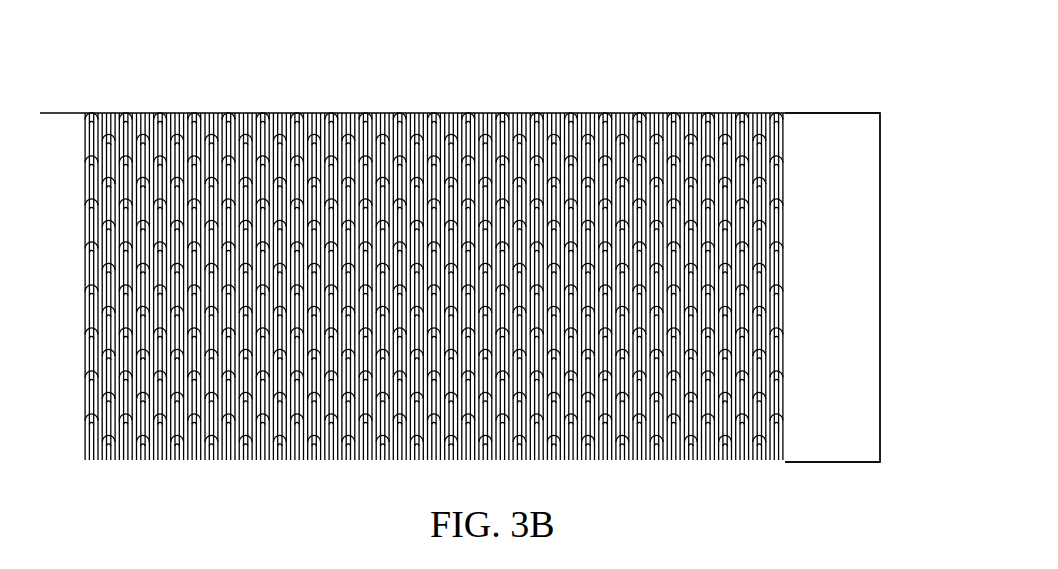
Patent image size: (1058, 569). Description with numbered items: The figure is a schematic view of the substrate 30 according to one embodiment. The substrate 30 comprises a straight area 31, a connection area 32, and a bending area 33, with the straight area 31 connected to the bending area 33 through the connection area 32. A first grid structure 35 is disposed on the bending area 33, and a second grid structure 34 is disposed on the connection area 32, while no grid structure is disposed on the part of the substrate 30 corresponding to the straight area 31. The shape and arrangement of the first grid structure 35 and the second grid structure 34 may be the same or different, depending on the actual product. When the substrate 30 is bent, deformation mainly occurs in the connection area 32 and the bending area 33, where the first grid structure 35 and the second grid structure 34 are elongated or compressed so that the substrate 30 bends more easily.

The substrate 30 is at (881, 308).
The straight area 31 is at (824, 89).
The connection area 32 is at (667, 92).
The bending area 33 is at (388, 86).
The second grid structure 34 is at (742, 112).
The first grid structure 35 is at (476, 113).